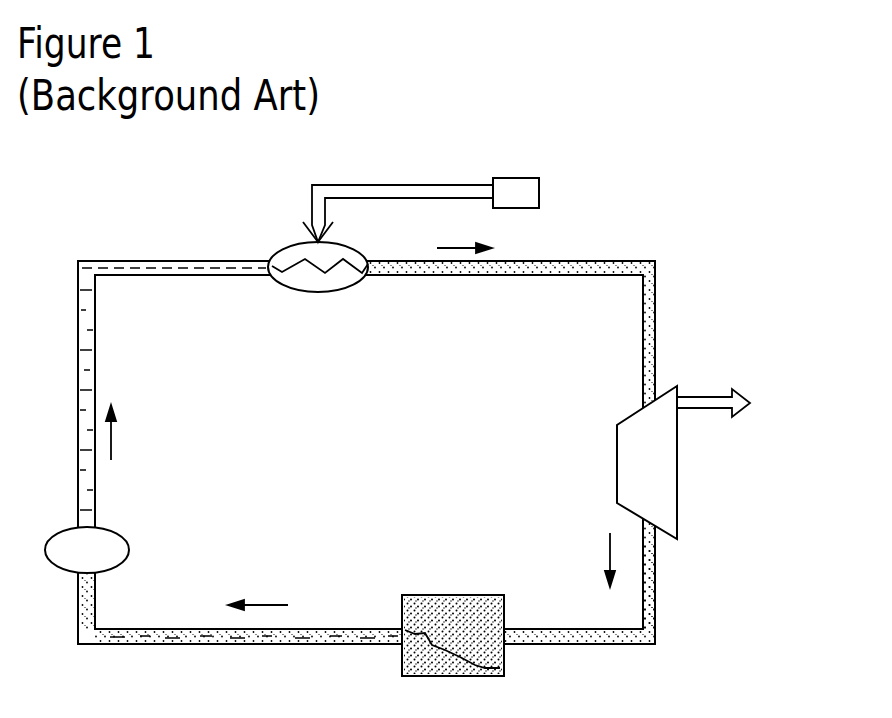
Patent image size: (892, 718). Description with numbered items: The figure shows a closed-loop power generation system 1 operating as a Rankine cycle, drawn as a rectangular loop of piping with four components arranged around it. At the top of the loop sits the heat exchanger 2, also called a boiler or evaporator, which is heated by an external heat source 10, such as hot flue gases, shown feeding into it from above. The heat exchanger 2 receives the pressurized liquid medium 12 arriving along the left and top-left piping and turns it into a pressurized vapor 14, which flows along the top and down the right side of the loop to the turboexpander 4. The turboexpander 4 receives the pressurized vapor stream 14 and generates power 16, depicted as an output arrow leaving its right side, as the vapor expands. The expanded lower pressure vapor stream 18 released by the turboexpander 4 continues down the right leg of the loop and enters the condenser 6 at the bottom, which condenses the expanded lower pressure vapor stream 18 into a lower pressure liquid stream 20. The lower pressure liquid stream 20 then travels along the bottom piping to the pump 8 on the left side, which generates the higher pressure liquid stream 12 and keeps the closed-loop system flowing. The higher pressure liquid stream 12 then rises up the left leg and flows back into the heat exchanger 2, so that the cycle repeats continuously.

The power generation system 1 is at (100, 211).
The heat exchanger 2 is at (352, 246).
The turboexpander 4 is at (668, 512).
The condenser 6 is at (442, 595).
The pump 8 is at (128, 545).
The external heat source 10 is at (530, 190).
The pressurized liquid medium 12 is at (268, 268).
The pressurized vapor 14 is at (382, 274).
The power 16 is at (738, 406).
The expanded lower pressure vapor stream 18 is at (648, 583).
The lower pressure liquid stream 20 is at (343, 628).